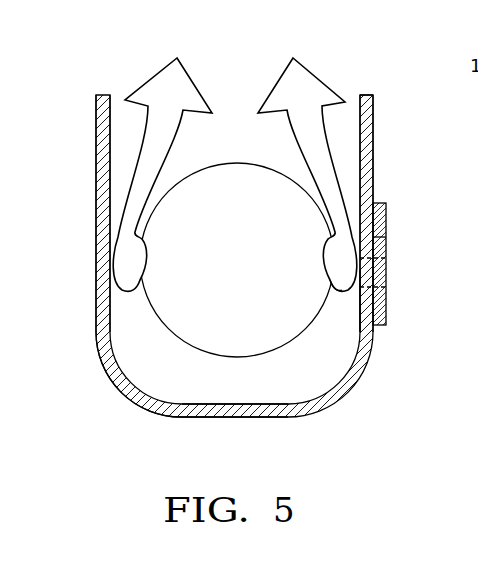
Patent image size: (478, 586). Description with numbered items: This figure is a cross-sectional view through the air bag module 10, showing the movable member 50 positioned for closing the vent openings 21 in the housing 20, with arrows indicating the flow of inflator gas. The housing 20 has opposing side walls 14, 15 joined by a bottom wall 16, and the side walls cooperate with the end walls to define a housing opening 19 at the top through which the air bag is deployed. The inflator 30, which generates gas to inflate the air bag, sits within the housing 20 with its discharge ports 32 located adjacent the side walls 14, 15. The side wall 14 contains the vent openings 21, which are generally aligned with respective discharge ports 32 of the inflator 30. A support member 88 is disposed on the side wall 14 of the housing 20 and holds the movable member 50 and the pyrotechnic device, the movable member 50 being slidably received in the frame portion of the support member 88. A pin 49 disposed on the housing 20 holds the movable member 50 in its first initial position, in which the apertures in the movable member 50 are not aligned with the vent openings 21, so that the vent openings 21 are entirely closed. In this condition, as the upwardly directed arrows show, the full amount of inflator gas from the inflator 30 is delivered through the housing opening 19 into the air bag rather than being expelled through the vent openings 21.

The air bag module 10 is at (248, 245).
The side wall 14 is at (368, 127).
The side wall 15 is at (96, 163).
The bottom wall 16 is at (312, 407).
The housing opening 19 is at (360, 100).
The housing 20 is at (127, 398).
The vent openings 21 is at (368, 288).
The inflator 30 is at (245, 359).
The discharge ports 32 is at (337, 293).
The pin 49 is at (380, 268).
The movable member 50 is at (387, 233).
The support member 88 is at (385, 200).